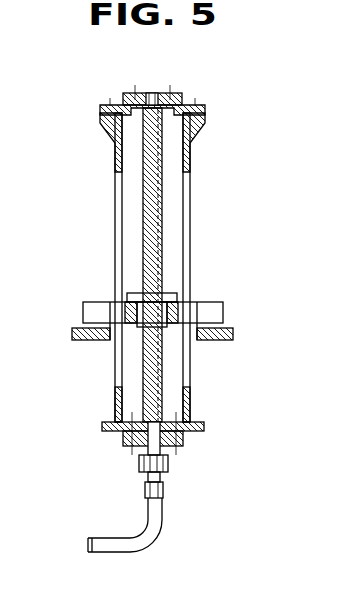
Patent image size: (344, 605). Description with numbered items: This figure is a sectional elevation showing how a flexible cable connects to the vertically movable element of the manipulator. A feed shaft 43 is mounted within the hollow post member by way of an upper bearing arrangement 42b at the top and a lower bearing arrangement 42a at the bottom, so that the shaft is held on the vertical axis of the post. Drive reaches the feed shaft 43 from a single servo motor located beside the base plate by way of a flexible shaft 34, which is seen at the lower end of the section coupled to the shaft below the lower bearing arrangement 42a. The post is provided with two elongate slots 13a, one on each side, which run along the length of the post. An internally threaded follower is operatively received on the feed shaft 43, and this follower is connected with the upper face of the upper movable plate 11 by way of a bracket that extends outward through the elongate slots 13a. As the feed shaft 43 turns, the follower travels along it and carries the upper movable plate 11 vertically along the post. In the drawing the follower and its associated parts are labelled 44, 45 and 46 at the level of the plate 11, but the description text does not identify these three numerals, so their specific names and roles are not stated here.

The upper bearing arrangement 42b is at (174, 93).
The feed shaft 43 is at (165, 192).
The elongate slots 13a is at (115, 200).
The mounting block 44 is at (124, 312).
The bearing bushing 45 is at (147, 308).
The cap seal 46 is at (168, 285).
The upper movable plate 11 is at (90, 340).
The lower bearing arrangement 42a is at (125, 446).
The flexible shaft 34 is at (103, 537).